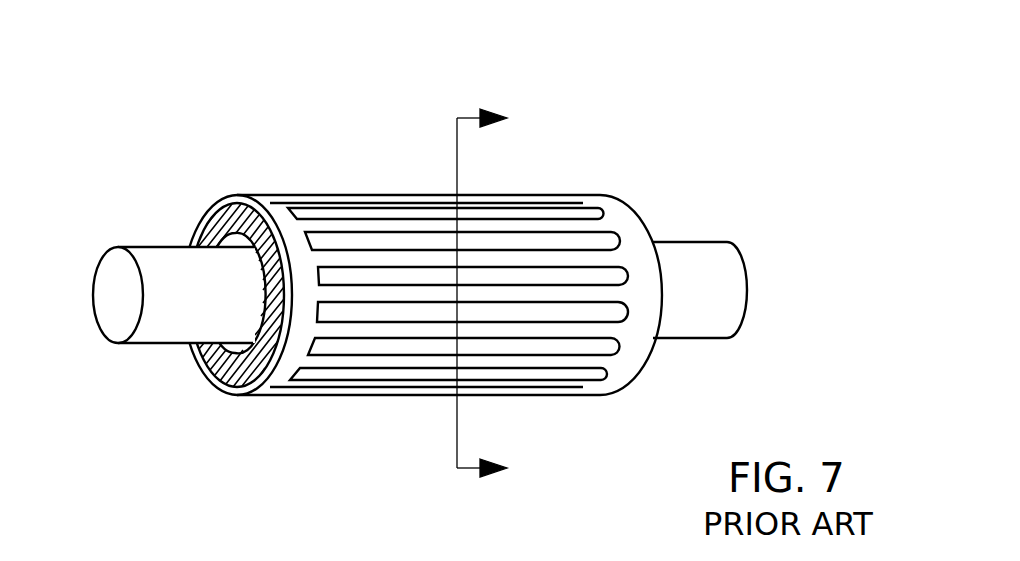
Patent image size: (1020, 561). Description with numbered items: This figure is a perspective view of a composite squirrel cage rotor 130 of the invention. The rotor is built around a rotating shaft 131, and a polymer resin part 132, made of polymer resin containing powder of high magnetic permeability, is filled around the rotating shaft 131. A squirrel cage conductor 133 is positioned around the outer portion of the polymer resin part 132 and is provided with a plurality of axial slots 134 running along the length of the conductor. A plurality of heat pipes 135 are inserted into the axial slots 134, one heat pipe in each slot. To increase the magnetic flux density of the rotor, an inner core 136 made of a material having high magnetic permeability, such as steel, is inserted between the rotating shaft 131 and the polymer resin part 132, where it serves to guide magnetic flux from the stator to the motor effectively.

The composite squirrel cage rotor 130 is at (458, 254).
The rotating shaft 131 is at (175, 263).
The polymer resin part 132 is at (208, 390).
The squirrel cage conductor 133 is at (633, 232).
The axial slots 134 is at (630, 302).
The heat pipes 135 is at (545, 313).
The inner core 136 is at (187, 353).